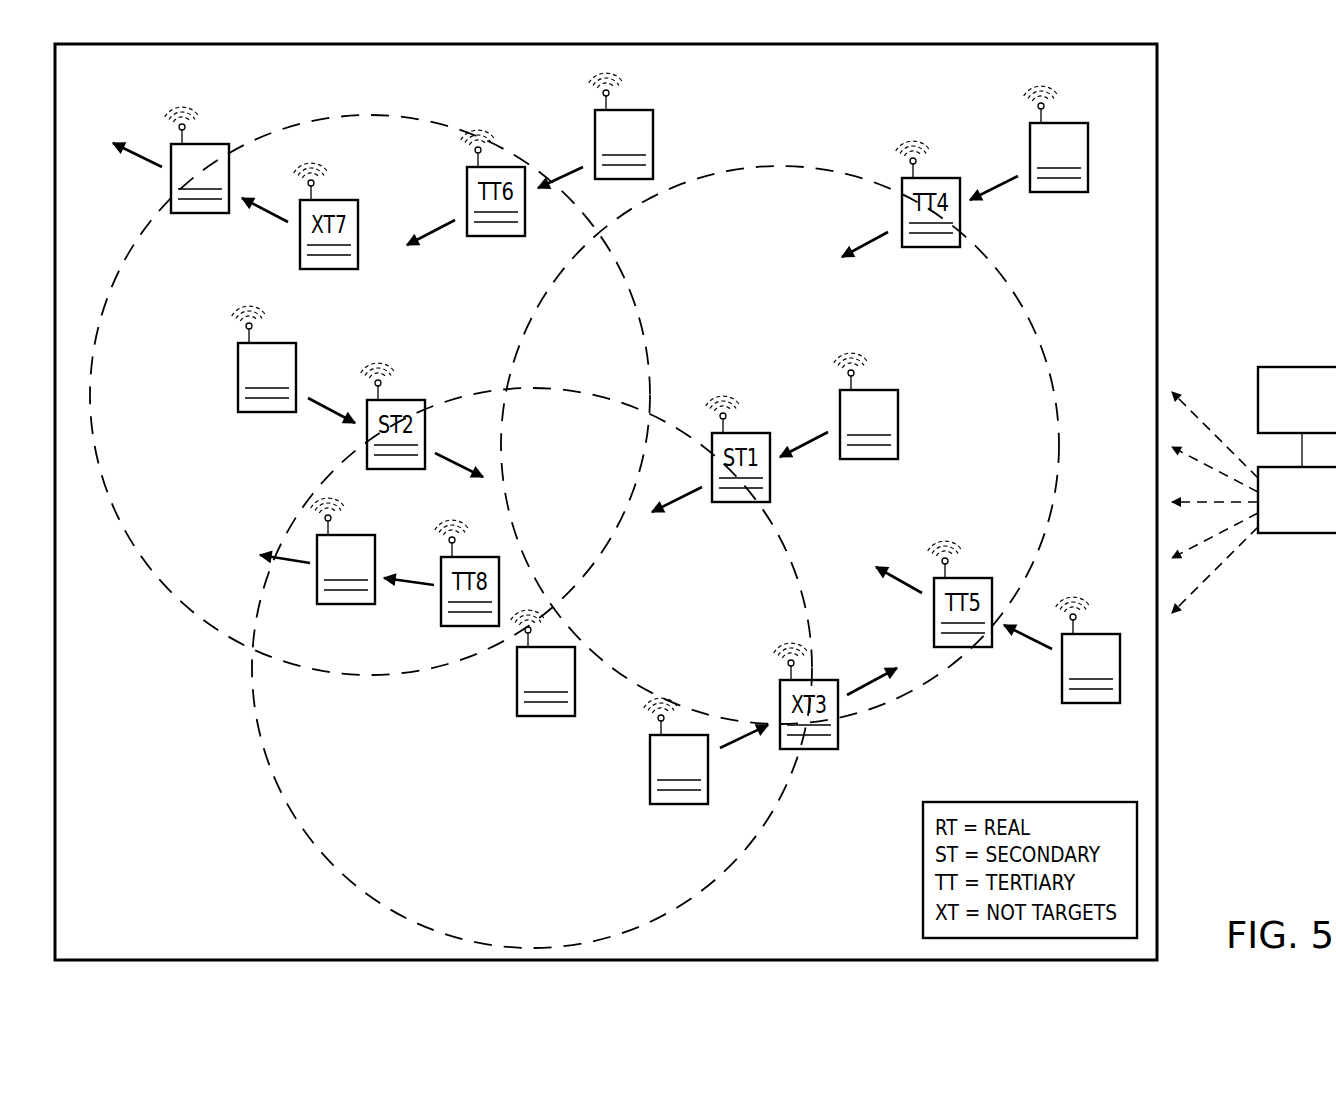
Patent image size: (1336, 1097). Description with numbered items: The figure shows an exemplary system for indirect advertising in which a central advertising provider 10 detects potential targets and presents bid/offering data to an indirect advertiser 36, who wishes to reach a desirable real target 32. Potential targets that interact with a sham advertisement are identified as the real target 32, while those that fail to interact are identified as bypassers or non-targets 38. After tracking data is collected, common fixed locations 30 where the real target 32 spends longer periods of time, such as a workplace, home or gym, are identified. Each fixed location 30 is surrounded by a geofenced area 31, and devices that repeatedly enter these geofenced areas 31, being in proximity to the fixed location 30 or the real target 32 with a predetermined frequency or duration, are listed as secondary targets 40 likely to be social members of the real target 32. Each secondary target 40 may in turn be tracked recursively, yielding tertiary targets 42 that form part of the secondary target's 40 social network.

The central advertising provider 10 is at (1288, 517).
The indirect advertiser 36 is at (1288, 418).
The fixed location 30 is at (547, 481).
The geofenced area 31 is at (197, 496).
The real target 32 is at (546, 716).
The non-target 38 is at (202, 213).
The secondary target 40 is at (238, 378).
The tertiary target 42 is at (653, 142).